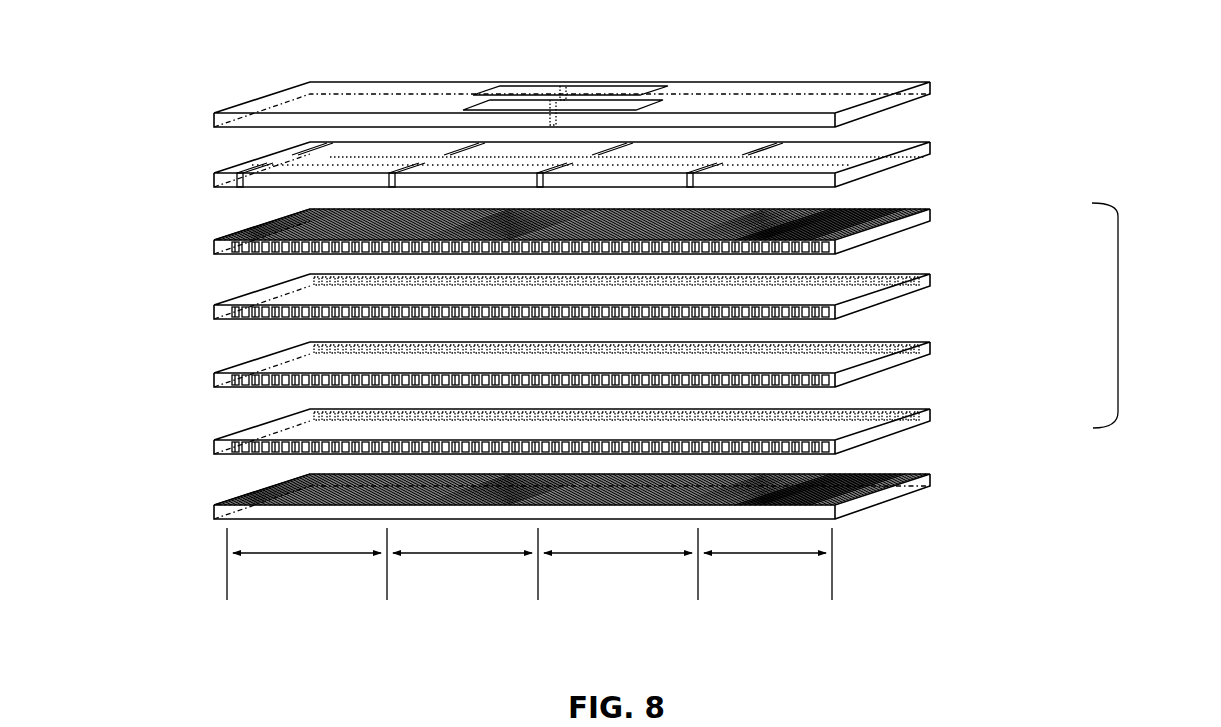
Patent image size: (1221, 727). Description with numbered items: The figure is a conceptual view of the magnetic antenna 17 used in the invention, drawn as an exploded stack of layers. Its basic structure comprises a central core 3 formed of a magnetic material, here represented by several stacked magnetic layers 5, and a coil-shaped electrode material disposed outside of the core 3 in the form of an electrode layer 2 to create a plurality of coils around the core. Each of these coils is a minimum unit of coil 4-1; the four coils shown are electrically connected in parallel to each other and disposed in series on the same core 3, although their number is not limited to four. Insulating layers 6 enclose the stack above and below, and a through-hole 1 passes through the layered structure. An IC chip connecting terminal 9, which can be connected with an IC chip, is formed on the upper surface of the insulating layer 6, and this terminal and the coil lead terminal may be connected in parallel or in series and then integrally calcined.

The magnetic antenna 17 is at (247, 62).
The IC chip connecting terminal 9 is at (757, 55).
The through-hole 1 is at (237, 175).
The insulating layer 6 is at (937, 88).
The electrode layer 2 is at (897, 193).
The magnetic layer 5 is at (938, 213).
The core 3 is at (1144, 315).
The minimum unit of coil 4-1 is at (529, 583).